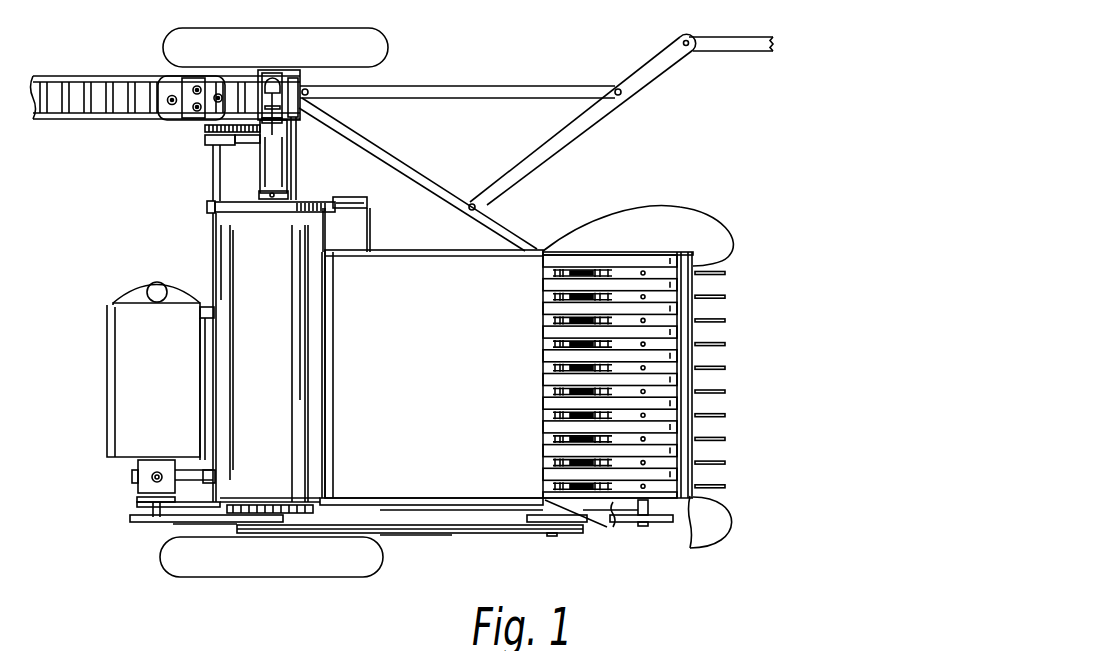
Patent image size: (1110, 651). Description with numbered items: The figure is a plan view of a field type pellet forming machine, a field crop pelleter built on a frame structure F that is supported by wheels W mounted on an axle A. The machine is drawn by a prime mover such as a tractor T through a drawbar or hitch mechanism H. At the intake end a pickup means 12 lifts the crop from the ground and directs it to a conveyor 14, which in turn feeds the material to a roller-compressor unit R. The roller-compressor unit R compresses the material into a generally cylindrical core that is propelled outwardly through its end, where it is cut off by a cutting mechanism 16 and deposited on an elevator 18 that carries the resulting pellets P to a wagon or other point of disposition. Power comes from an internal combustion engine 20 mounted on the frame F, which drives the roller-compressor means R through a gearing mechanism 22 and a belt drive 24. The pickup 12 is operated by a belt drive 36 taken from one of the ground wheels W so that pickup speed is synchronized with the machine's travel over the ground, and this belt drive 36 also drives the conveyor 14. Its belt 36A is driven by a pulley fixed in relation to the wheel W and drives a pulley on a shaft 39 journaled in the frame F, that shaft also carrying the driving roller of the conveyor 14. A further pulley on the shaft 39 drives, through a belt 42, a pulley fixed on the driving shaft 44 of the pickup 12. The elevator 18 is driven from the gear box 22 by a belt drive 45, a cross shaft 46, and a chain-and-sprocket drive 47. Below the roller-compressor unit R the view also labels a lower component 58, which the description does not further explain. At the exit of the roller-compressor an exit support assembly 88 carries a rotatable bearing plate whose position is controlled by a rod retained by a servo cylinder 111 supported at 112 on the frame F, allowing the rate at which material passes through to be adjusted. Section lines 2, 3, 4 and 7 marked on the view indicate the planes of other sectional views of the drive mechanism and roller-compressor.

The pickup means 12 is at (695, 333).
The conveyor 14 is at (431, 380).
The cutting mechanism 16 is at (297, 165).
The elevator 18 is at (88, 58).
The internal combustion engine 20 is at (160, 371).
The gearing mechanism 22 is at (142, 490).
The belt drive 24 is at (217, 524).
The belt drive 36 is at (552, 545).
The belt 36A is at (462, 533).
The shaft 39 is at (543, 508).
The belt 42 is at (627, 522).
The driving shaft 44 is at (652, 515).
The belt drive 45 is at (208, 493).
The cross shaft 46 is at (215, 268).
The chain-and-sprocket drive 47 is at (208, 130).
The lower plate 58 is at (320, 495).
The exit support assembly 88 is at (226, 212).
The servo cylinder 111 is at (363, 184).
The servo cylinder support 112 is at (380, 216).
The section line 2- 2 is at (163, 535).
The section line 3- 3 is at (208, 370).
The section line 4- 4 is at (200, 530).
The section line 7- 7 is at (293, 42).
The axle A is at (268, 70).
The frame structure F is at (437, 174).
The hitch mechanism H is at (657, 63).
The pellets P is at (173, 82).
The roller-compressor unit R is at (276, 363).
The tractor T is at (731, 52).
The wheels W is at (326, 36).